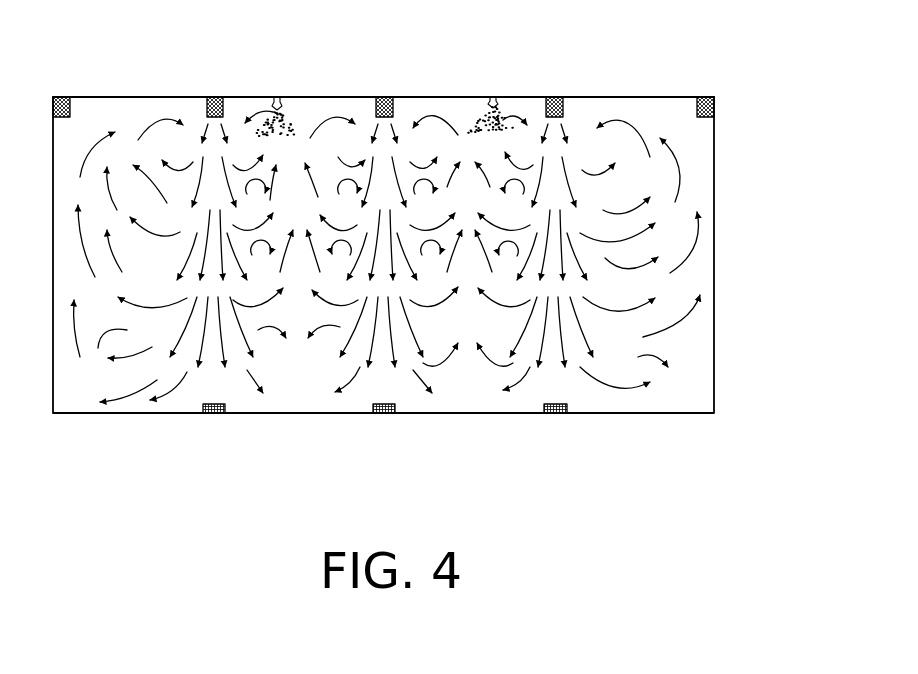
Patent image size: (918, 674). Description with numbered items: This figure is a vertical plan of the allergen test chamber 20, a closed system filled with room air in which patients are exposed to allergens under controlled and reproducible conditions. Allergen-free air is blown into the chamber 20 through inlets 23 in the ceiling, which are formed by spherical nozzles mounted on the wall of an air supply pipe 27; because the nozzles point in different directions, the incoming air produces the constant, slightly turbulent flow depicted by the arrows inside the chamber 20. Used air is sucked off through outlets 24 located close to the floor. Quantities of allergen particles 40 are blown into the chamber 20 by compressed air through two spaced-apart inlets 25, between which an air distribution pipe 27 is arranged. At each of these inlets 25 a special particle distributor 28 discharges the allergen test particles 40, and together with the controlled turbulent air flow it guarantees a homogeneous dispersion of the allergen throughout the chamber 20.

The allergen test chamber 20 is at (740, 218).
The inlets 23 is at (562, 118).
The outlets 24 is at (215, 413).
The inlets for allergen particles 25 is at (495, 97).
The air supply pipe 27 is at (214, 97).
The particle distributor 28 is at (488, 103).
The allergen particles 40 is at (280, 118).